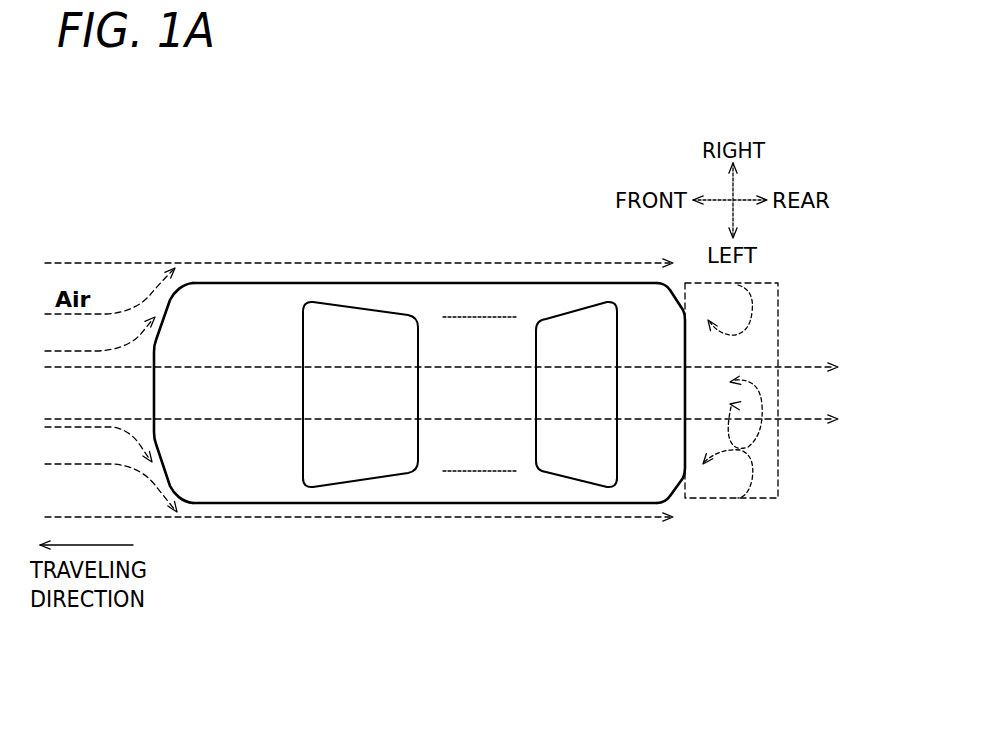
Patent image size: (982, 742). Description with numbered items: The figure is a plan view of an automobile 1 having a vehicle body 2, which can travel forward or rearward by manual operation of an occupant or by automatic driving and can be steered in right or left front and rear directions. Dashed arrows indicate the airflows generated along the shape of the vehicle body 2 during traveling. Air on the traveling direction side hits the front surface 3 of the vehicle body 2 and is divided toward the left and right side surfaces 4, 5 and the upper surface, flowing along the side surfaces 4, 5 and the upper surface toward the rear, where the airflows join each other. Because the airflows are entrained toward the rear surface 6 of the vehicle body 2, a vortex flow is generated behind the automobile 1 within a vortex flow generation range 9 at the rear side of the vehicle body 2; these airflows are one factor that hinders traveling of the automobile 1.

The automobile 1 is at (540, 230).
The vehicle body 2 is at (477, 290).
The front surface 3 is at (154, 388).
The side surface 4 is at (408, 283).
The side surface 5 is at (412, 503).
The rear surface 6 is at (685, 367).
The vortex flow generation range 9 is at (765, 500).